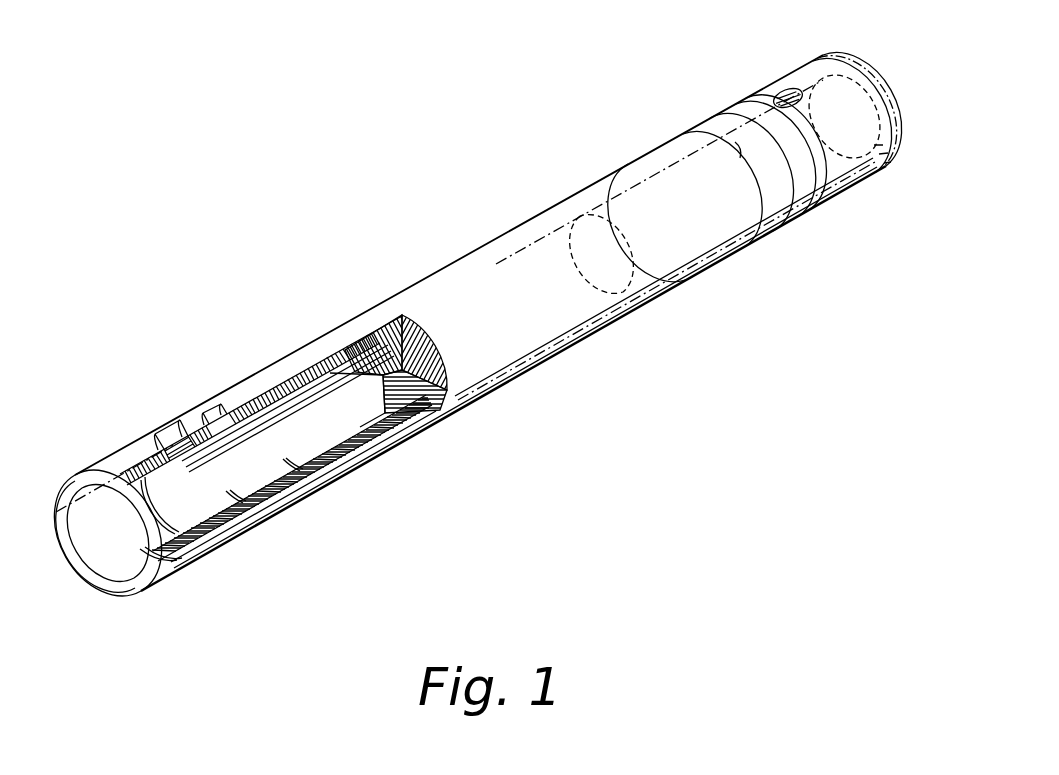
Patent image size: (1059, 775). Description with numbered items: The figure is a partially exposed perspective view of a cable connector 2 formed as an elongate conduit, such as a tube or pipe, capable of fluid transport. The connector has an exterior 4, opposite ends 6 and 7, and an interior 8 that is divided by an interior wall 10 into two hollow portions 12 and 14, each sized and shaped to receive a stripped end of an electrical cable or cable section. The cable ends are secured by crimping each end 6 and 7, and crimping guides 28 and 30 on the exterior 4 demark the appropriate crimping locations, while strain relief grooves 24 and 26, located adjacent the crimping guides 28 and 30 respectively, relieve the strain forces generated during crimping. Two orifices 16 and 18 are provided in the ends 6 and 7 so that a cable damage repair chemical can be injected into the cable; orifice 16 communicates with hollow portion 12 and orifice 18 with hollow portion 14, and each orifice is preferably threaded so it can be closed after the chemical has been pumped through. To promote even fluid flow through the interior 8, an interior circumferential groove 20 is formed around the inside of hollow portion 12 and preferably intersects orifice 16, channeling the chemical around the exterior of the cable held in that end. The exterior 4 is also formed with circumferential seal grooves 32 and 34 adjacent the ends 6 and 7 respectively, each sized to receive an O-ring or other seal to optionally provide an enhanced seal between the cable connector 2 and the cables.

The cable connector 2 is at (678, 526).
The exterior 4 is at (360, 326).
The end 6 is at (105, 575).
The end 7 is at (884, 90).
The interior 8 is at (382, 430).
The interior wall 10 is at (522, 330).
The hollow portion 12 is at (303, 445).
The hollow portion 14 is at (712, 228).
The orifice 16 is at (168, 430).
The orifice 18 is at (788, 89).
The interior circumferential groove 20 is at (150, 480).
The strain relief groove 24 is at (270, 503).
The strain relief groove 26 is at (797, 205).
The crimping guide 28 is at (312, 365).
The crimping guide 30 is at (650, 172).
The circumferential seal groove 32 is at (158, 580).
The circumferential seal groove 34 is at (897, 155).